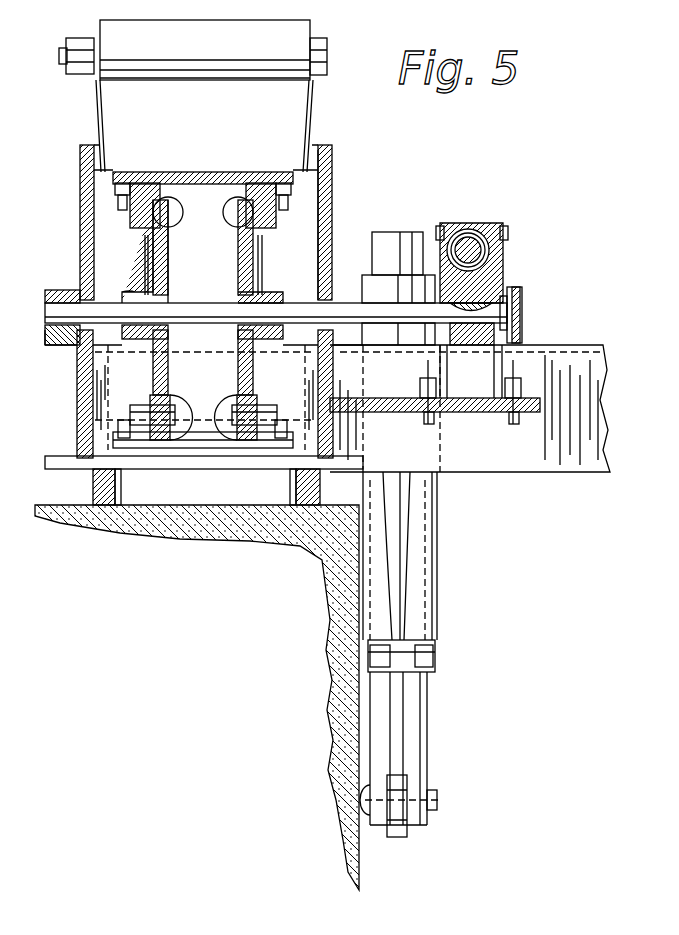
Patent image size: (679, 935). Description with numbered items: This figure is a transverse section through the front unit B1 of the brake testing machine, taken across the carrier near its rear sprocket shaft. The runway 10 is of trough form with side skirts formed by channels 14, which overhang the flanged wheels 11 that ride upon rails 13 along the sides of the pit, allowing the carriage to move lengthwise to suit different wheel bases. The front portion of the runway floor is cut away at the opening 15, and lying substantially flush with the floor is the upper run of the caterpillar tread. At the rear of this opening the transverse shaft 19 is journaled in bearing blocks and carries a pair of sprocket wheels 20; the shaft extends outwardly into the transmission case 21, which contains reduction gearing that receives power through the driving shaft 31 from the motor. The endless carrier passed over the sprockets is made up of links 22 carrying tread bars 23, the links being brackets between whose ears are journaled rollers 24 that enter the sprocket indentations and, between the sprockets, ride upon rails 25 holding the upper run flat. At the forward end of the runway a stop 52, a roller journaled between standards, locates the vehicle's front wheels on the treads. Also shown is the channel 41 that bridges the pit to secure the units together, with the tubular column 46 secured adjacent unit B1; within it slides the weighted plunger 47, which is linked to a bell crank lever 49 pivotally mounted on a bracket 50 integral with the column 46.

The stop 52 is at (292, 35).
The opening 15 is at (112, 172).
The runway 10 is at (80, 182).
The front unit B1 is at (330, 197).
The tread bars 23 is at (215, 172).
The sprocket wheels 20 is at (168, 262).
The links 22 is at (140, 228).
The rails 25 is at (232, 233).
The rollers 24 is at (168, 172).
The shaft 19 is at (200, 303).
The channels 14 is at (77, 378).
The wheels 11 is at (100, 464).
The rails 13 is at (118, 492).
The channel 41 is at (510, 460).
The plunger 47 is at (400, 232).
The driving shaft 31 is at (488, 250).
The transmission case 21 is at (505, 275).
The tubular column 46 is at (440, 575).
The bracket 50 is at (415, 546).
The bell crank lever 49 is at (400, 765).